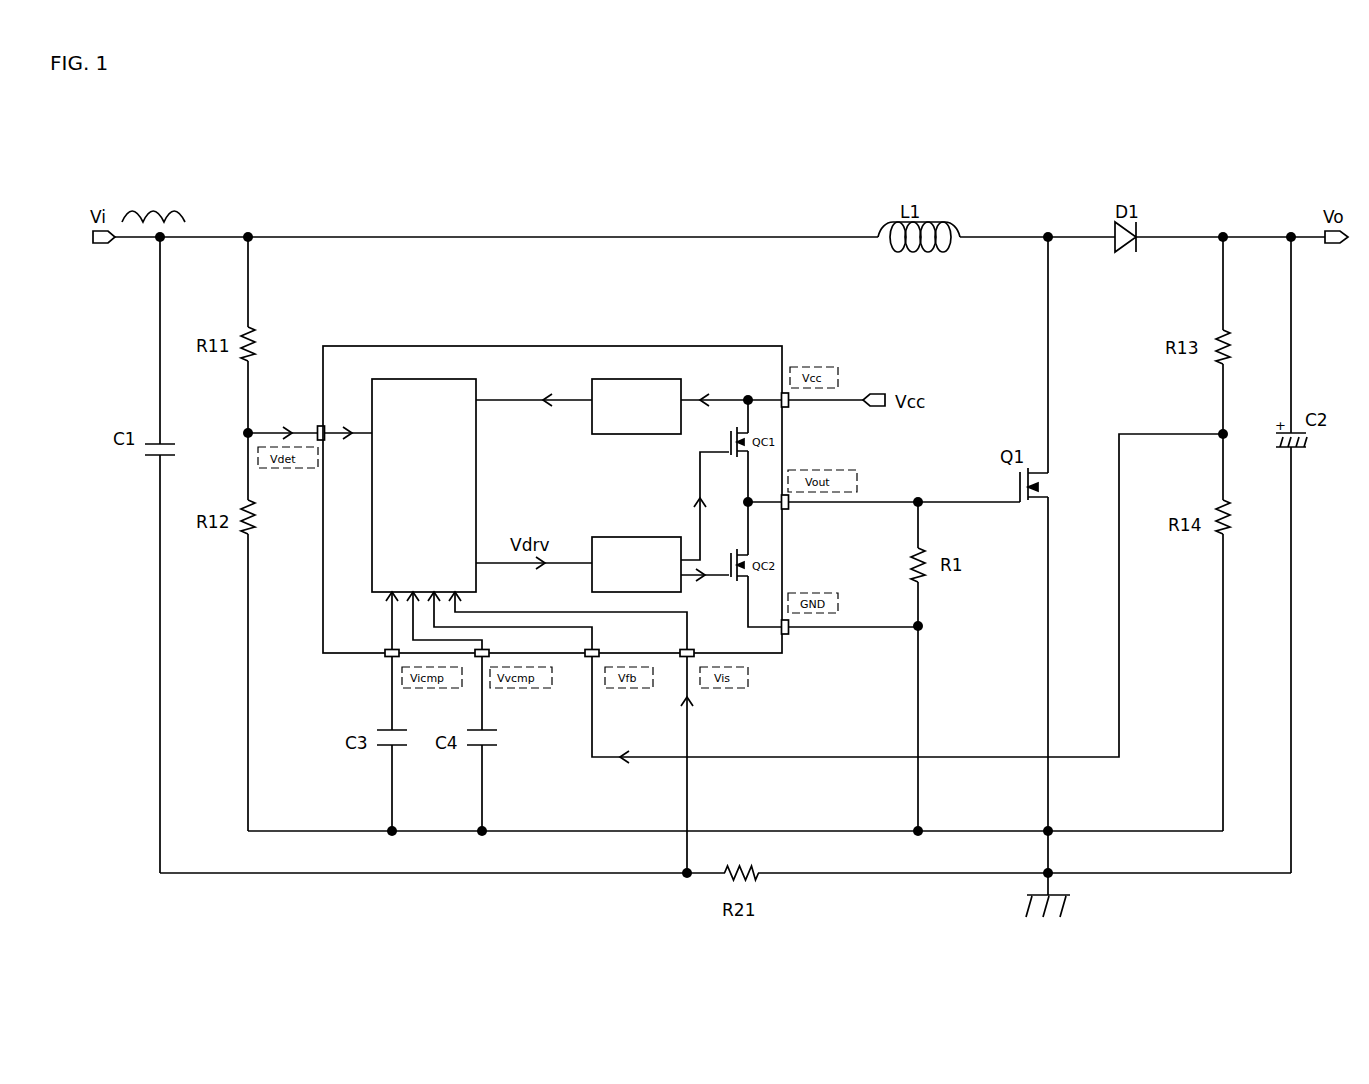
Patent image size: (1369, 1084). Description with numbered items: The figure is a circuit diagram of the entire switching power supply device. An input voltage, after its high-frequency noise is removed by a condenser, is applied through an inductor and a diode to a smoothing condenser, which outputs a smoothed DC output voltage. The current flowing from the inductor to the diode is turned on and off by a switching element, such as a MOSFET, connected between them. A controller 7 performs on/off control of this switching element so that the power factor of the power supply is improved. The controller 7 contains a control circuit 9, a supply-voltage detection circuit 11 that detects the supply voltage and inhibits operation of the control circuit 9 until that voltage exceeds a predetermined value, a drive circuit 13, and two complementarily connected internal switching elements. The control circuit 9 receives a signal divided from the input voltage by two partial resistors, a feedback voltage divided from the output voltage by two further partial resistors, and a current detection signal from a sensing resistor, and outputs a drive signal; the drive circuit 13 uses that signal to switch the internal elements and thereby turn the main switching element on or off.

The controller 7 is at (700, 346).
The control circuit 9 is at (476, 447).
The Vcc detection circuit 11 is at (606, 434).
The drive circuit 13 is at (656, 537).